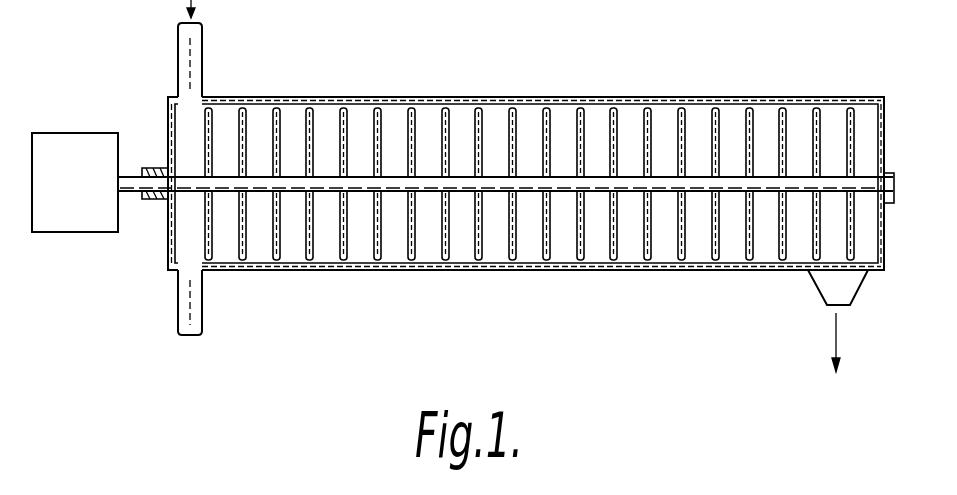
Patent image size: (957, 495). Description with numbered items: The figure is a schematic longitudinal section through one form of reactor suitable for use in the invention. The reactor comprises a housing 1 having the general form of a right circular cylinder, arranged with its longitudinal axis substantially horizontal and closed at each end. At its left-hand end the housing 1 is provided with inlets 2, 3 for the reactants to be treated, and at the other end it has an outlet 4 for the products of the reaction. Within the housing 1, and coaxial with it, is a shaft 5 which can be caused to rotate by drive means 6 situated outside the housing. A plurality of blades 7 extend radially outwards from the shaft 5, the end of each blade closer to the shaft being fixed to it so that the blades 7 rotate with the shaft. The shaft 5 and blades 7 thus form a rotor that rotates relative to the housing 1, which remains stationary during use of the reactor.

The housing 1 is at (533, 97).
The inlet 2 is at (202, 61).
The inlet 3 is at (202, 297).
The outlet 4 is at (862, 280).
The shaft 5 is at (757, 177).
The drive means 6 is at (80, 152).
The blades 7 is at (652, 228).